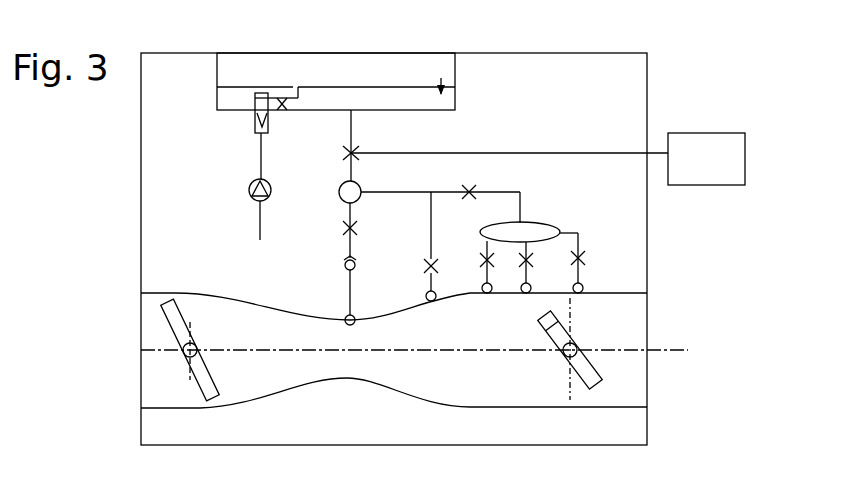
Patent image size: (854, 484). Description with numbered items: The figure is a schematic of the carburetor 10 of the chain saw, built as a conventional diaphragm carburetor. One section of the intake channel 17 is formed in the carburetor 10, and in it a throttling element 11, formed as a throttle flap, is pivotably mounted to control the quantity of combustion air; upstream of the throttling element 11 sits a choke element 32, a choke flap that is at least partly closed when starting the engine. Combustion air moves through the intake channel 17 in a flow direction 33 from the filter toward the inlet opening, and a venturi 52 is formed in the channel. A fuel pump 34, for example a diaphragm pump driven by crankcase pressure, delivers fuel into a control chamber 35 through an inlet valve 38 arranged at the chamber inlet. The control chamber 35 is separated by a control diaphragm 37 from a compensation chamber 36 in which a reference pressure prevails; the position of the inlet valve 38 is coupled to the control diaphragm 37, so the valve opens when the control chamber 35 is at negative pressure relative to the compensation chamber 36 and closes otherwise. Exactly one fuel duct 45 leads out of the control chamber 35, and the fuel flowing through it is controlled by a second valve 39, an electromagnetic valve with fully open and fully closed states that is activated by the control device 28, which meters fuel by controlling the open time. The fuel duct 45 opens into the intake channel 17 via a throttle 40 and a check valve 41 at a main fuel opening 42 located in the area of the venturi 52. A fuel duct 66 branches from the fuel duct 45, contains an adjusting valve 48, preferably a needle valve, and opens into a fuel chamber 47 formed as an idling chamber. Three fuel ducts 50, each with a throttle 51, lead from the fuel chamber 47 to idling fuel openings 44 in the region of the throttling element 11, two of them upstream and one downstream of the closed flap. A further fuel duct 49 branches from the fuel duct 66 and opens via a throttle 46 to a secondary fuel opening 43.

The carburetor 10 is at (612, 58).
The throttling element 11 is at (600, 385).
The intake channel 17 is at (635, 338).
The control device 28 is at (692, 138).
The choke element 32 is at (165, 310).
The flow direction 33 is at (507, 378).
The fuel pump 34 is at (249, 194).
The control chamber 35 is at (385, 100).
The compensation chamber 36 is at (338, 68).
The control diaphragm 37 is at (412, 86).
The inlet valve 38 is at (250, 123).
The second valve 39 is at (348, 153).
The throttle 40 is at (344, 227).
The check valve 41 is at (344, 263).
The main fuel opening 42 is at (344, 317).
The secondary fuel opening 43 is at (426, 297).
The idling fuel openings 44 is at (576, 293).
The fuel duct 45 is at (352, 128).
The throttle 46 is at (425, 266).
The fuel chamber 47 is at (538, 228).
The adjusting valve 48 is at (478, 187).
The fuel duct 49 is at (428, 222).
The fuel ducts 50 is at (482, 284).
The throttle 51 is at (482, 254).
The venturi 52 is at (378, 322).
The fuel duct 66 is at (403, 194).